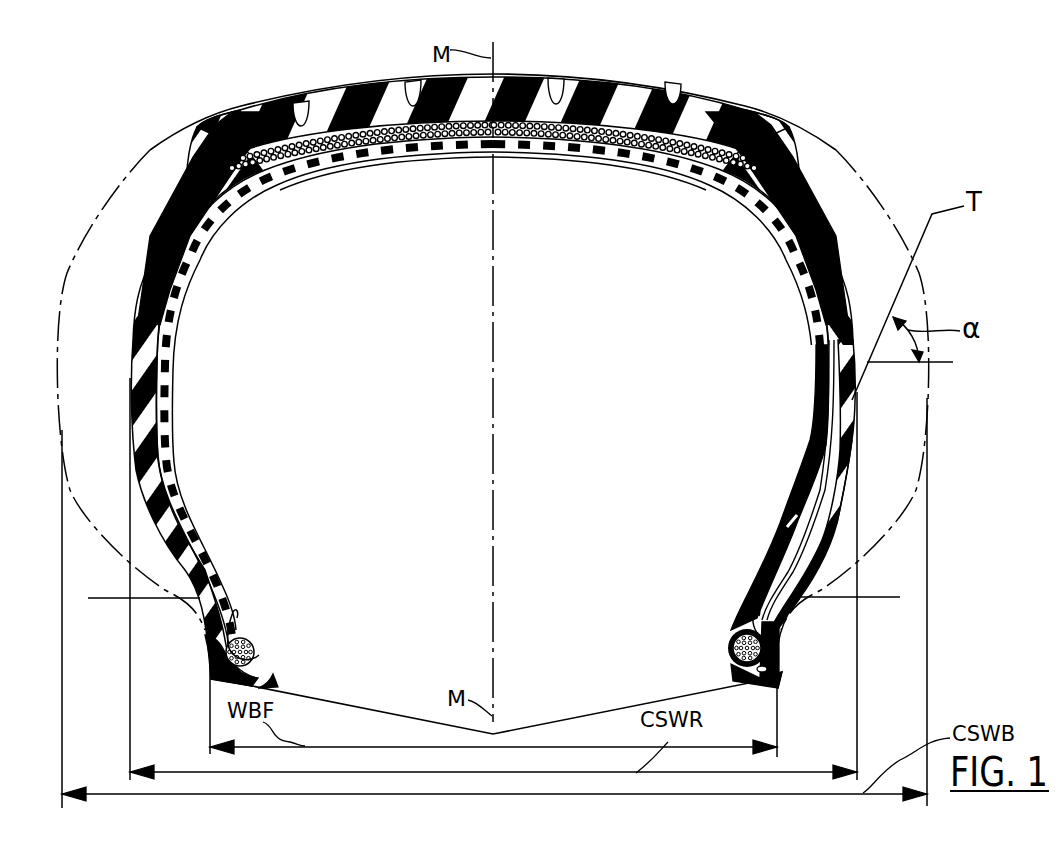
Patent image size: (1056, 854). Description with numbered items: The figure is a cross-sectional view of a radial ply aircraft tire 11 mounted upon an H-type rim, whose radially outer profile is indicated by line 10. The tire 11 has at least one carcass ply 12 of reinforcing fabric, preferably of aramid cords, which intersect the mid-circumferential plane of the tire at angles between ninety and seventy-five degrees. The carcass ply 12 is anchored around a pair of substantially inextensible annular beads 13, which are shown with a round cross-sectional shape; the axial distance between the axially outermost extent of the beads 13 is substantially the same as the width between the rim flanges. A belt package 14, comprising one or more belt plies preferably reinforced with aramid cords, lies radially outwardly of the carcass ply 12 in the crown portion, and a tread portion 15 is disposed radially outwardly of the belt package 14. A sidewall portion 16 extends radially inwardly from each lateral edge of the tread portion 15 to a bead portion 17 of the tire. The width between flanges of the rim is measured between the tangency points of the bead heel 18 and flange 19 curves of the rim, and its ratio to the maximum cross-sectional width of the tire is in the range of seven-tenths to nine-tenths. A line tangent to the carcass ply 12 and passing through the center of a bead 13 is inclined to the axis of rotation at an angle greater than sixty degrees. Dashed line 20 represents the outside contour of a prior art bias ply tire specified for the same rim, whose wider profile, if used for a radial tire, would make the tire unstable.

The radially outer profile of H-type rim 10 is at (597, 712).
The radial ply aircraft tire 11 is at (784, 124).
The carcass ply 12 is at (794, 520).
The annular beads 13 is at (253, 657).
The belt package 14 is at (572, 118).
The tread portion 15 is at (692, 113).
The sidewall portion 16 is at (822, 508).
The bead portion 17 is at (771, 668).
The bead heel 18 is at (770, 669).
The flange 19 is at (784, 612).
The outside contour of bias ply tire 20 is at (926, 300).